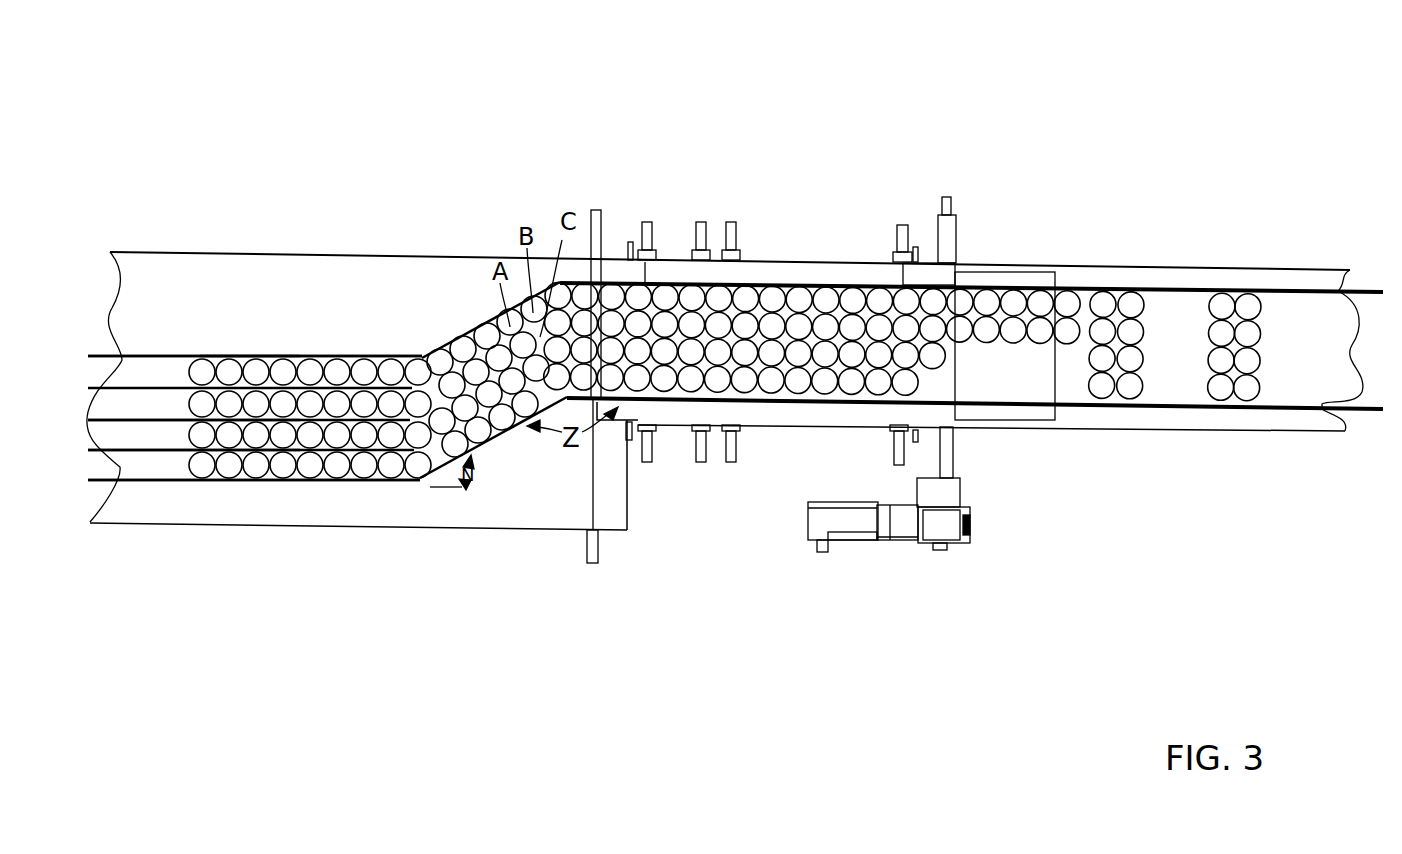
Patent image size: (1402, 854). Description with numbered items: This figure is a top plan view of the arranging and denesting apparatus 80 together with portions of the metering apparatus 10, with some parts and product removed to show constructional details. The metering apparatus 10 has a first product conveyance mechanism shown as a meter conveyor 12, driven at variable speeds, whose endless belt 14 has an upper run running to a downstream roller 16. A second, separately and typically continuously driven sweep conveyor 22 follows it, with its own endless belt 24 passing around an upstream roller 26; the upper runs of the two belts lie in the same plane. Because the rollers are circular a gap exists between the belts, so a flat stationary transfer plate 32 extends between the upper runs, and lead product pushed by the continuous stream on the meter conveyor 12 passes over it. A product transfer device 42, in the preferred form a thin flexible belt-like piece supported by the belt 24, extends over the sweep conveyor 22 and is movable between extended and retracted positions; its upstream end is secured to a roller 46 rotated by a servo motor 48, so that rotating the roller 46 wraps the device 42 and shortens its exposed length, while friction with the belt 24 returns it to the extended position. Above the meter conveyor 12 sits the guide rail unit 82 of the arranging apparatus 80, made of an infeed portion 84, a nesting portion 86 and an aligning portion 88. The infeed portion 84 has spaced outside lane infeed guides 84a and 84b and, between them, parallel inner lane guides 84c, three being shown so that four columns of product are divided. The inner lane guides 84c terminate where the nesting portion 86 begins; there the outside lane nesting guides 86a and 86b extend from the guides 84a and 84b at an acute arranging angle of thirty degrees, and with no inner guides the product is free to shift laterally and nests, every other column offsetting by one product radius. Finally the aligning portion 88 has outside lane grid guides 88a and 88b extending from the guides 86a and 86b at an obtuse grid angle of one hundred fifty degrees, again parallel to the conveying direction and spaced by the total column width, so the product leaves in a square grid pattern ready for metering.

The apparatus for metering product 10 is at (1153, 161).
The meter conveyor 12 is at (432, 528).
The endless belt 14 is at (562, 514).
The downstream roller 16 is at (903, 225).
The sweep conveyor 22 is at (1184, 266).
The endless belt 24 is at (1258, 278).
The upstream roller 26 is at (953, 226).
The transfer plate 32 is at (930, 262).
The product transfer device 42 is at (1030, 280).
The roller 46 is at (960, 483).
The servo motor 48 is at (898, 528).
The apparatus for arranging and denesting nestable product 80 is at (430, 143).
The guide rail unit 82 is at (318, 504).
The infeed portion 84 is at (163, 355).
The outside lane infeed guide 84a is at (232, 356).
The outside lane infeed guide 84b is at (180, 483).
The inner lane guide 84c is at (126, 387).
The nesting portion 86 is at (438, 350).
The outside lane nesting guide 86a is at (484, 322).
The outside lane nesting guide 86b is at (492, 437).
The aligning portion 88 is at (770, 282).
The outside lane grid guide 88a is at (813, 284).
The outside lane grid guide 88b is at (847, 403).